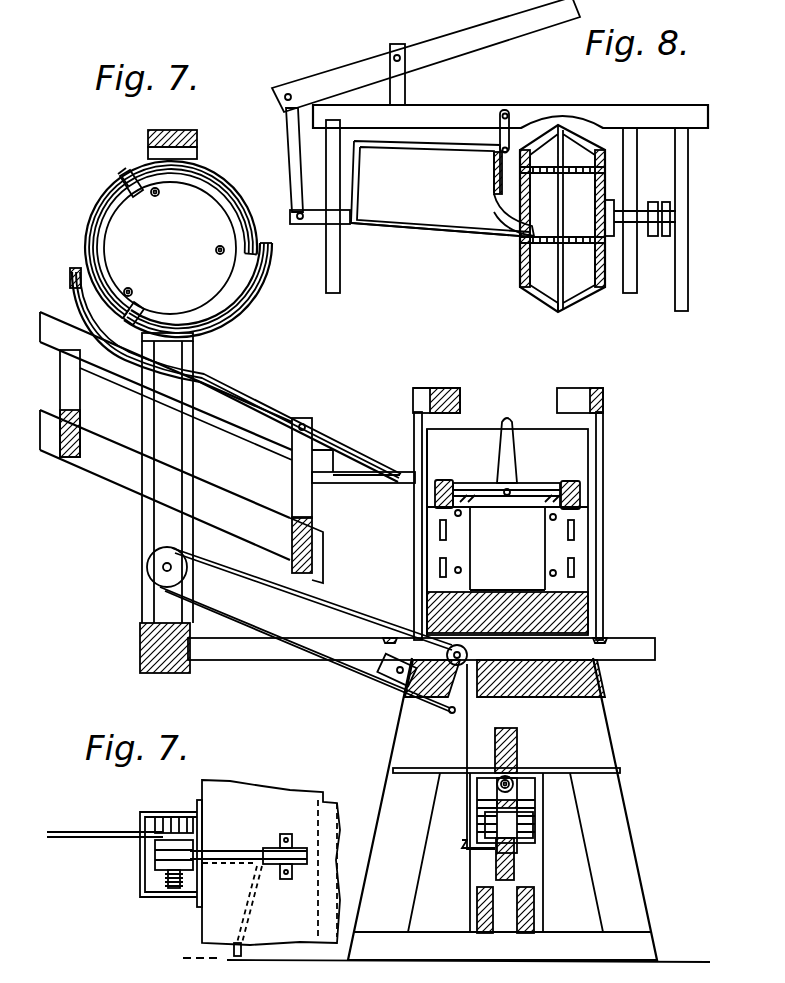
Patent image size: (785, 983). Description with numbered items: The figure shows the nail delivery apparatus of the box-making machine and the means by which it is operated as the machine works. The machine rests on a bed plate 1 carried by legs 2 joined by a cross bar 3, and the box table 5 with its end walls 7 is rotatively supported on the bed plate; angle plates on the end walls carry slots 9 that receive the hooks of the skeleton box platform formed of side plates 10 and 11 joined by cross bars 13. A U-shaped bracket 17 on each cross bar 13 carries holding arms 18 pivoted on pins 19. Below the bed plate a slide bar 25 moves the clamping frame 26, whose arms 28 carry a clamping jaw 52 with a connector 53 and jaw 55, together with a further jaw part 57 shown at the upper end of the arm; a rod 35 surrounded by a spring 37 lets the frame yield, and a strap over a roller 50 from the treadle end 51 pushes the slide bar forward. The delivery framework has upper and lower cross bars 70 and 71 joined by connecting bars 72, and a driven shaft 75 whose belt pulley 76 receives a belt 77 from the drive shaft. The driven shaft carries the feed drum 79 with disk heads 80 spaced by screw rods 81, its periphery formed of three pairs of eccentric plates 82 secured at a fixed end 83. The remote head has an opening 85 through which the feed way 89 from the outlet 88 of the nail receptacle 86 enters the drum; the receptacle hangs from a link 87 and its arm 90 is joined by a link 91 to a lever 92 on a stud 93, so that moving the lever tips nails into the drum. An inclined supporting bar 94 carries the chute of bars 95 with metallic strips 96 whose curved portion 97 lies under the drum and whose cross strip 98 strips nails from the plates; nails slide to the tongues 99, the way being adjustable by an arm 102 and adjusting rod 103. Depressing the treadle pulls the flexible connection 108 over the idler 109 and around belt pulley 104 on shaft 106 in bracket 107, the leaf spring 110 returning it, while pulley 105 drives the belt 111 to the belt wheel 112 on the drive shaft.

In FIG. 7, the bed plate 1 is at (600, 690).
In FIG. 7, the legs 2 is at (625, 818).
In FIG. 7, the cross bar 3 is at (503, 944).
In FIG. 7, the box support or table 5 is at (517, 592).
In FIG. 7, the end walls 7 is at (590, 452).
In FIG. 7, the slots 9 is at (448, 562).
In FIG. 7, the side plate 10 is at (435, 493).
In FIG. 7, the side plate 11 is at (506, 498).
In FIG. 7, the cross bars 13 is at (497, 508).
In FIG. 7, the U-shaped bracket 17 is at (466, 480).
In FIG. 7, the holding arms 18 is at (506, 418).
In FIG. 7, the pins 19 is at (512, 488).
In FIG. 7, the slide bar 25 is at (522, 745).
In FIG. 7, the clamping frame 26 is at (418, 594).
In FIG. 7, the arms 28 is at (418, 543).
In FIG. 7, the rod 35 is at (512, 780).
In FIG. 7, the spring 37 is at (490, 795).
In FIG. 7, the roller 50 is at (520, 818).
In FIG. 7, the treadle end 51 is at (520, 880).
In FIG. 7, the clamping jaw 52 is at (413, 395).
In FIG. 7, the connector 53 is at (415, 417).
In FIG. 7, the jaw 55 is at (450, 390).
In FIG. 7, the block 57 is at (436, 388).
In FIG. 7, the upper cross bar 70 is at (176, 130).
In FIG. 8, the upper cross bar 70 is at (480, 103).
In FIG. 7, the lower cross bar 71 is at (140, 643).
In FIG. 7, the connecting bars 72 is at (142, 512).
In FIG. 8, the connecting bars 72 is at (340, 260).
In FIG. 8, the driven shaft 75 is at (645, 210).
In FIG. 8, the belt pulley 76 is at (672, 212).
In FIG. 7, the belt 77 is at (142, 409).
In FIG. 7, the feed drum 79 is at (540, 805).
In FIG. 8, the feed drum 79 is at (561, 313).
In FIG. 7, the disk heads 80 is at (170, 248).
In FIG. 8, the disk heads 80 is at (562, 218).
In FIG. 7, the screw rods 81 is at (215, 254).
In FIG. 8, the screw rods 81 is at (578, 166).
In FIG. 7, the plates 82 is at (98, 217).
In FIG. 7, the fixed end 83 is at (150, 205).
In FIG. 8, the opening 85 is at (508, 240).
In FIG. 8, the nail receptacle 86 is at (442, 189).
In FIG. 7, the link 87 is at (114, 178).
In FIG. 8, the link 87 is at (508, 112).
In FIG. 8, the outlet 88 is at (492, 195).
In FIG. 8, the feed way 89 is at (480, 236).
In FIG. 8, the arm 90 is at (320, 228).
In FIG. 8, the link 91 is at (290, 155).
In FIG. 8, the lever 92 is at (330, 78).
In FIG. 8, the stud 93 is at (405, 80).
In FIG. 7, the supporting bar 94 is at (142, 460).
In FIG. 7, the bars 95 is at (234, 430).
In FIG. 7, the metallic strips 96 is at (248, 404).
In FIG. 7, the curved portion 97 is at (78, 300).
In FIG. 7, the cross strip 98 is at (75, 270).
In FIG. 7, the tongues 99 is at (388, 472).
In FIG. 7, the arm 102 is at (310, 420).
In FIG. 7, the adjusting rod 103 is at (314, 433).
In FIG. 7, the belt pulley 104 is at (392, 684).
In FIG. 7, the belt pulley 105 is at (168, 817).
In FIG. 7, the shaft 106 is at (175, 895).
In FIG. 7, the bracket 107 is at (360, 672).
In FIG. 7, the flexible connection 108 is at (462, 742).
In FIG. 7, the idler 109 is at (468, 653).
In FIG. 7, the leaf spring 110 is at (448, 713).
In FIG. 7, the belt 111 is at (300, 580).
In FIG. 7, the belt wheel 112 is at (147, 575).